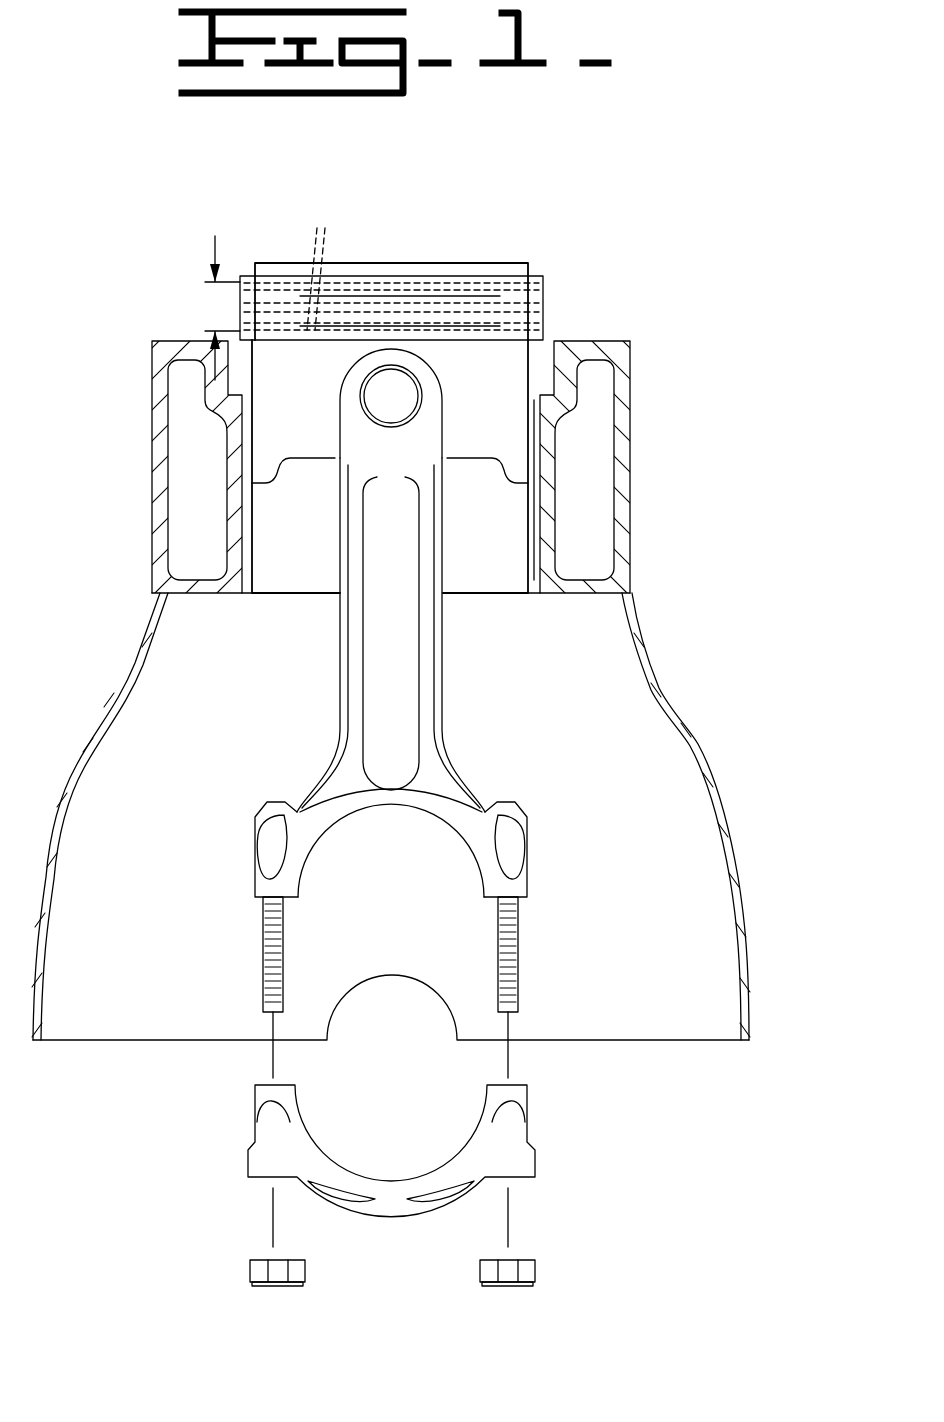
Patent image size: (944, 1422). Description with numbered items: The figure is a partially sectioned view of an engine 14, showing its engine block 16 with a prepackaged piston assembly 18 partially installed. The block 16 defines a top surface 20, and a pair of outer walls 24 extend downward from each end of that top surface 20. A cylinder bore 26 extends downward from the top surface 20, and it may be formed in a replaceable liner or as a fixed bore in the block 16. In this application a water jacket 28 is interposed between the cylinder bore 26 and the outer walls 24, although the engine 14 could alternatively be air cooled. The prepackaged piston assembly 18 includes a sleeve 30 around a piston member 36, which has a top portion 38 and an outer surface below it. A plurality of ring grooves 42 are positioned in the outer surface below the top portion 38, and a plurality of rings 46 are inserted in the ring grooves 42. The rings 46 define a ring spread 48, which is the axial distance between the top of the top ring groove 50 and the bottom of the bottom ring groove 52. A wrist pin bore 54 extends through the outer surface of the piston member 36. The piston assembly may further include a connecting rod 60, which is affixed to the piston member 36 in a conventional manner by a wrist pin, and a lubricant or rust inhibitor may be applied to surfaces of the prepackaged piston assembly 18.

The engine 14 is at (103, 238).
The engine block 16 is at (707, 672).
The prepackaged piston assembly 18 is at (508, 197).
The top surface 20 is at (168, 341).
The outer walls 24 is at (150, 593).
The cylinder bore 26 is at (525, 556).
The water jacket 28 is at (182, 438).
The sleeve 30 is at (425, 276).
The piston member 36 is at (270, 445).
The top portion 38 is at (393, 262).
The ring grooves 42 is at (317, 228).
The rings 46 is at (528, 327).
The ring spread 48 is at (215, 248).
The top ring groove 50 is at (517, 287).
The bottom ring groove 52 is at (500, 330).
The wrist pin bore 54 is at (372, 402).
The connecting rod 60 is at (323, 778).